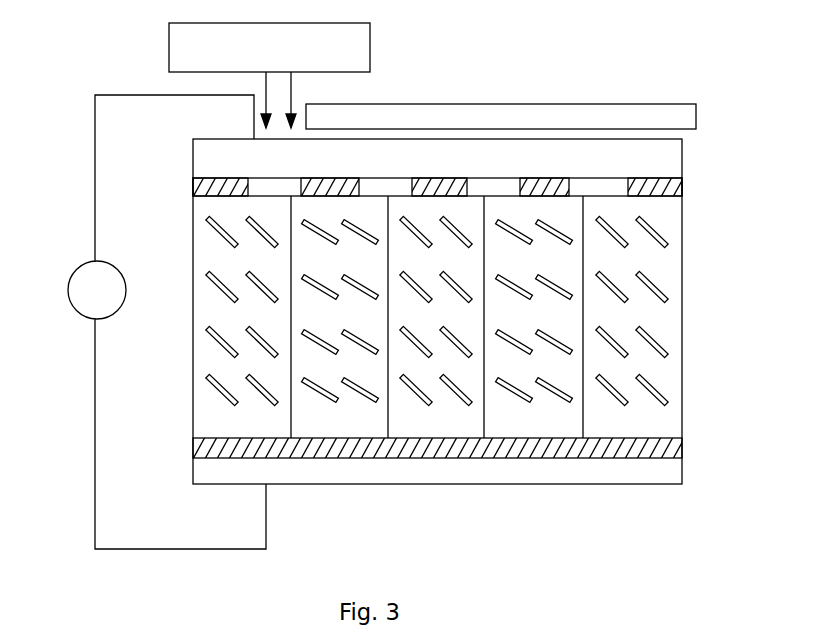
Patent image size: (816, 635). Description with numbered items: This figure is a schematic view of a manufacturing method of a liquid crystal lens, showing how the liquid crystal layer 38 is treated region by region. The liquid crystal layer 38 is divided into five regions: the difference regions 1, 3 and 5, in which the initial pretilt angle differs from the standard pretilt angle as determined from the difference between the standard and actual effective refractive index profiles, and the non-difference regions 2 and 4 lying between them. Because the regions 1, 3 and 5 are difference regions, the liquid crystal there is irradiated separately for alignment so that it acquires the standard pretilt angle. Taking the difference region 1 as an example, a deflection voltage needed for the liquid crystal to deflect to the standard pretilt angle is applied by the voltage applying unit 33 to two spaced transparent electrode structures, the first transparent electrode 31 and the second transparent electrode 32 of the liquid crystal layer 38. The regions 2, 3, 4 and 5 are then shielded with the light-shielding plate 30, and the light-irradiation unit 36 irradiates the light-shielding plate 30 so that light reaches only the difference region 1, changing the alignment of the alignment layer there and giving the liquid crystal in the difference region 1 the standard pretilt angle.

The difference region 1 is at (242, 305).
The non-difference region 2 is at (340, 303).
The difference region 3 is at (436, 305).
The non-difference region 4 is at (534, 303).
The difference region 5 is at (632, 305).
The light-shielding plate 30 is at (682, 104).
The first transparent electrode 31 is at (682, 178).
The second transparent electrode 32 is at (670, 484).
The voltage applying unit 33 is at (68, 292).
The light-irradiation unit 36 is at (313, 72).
The liquid crystal layer 38 is at (682, 298).